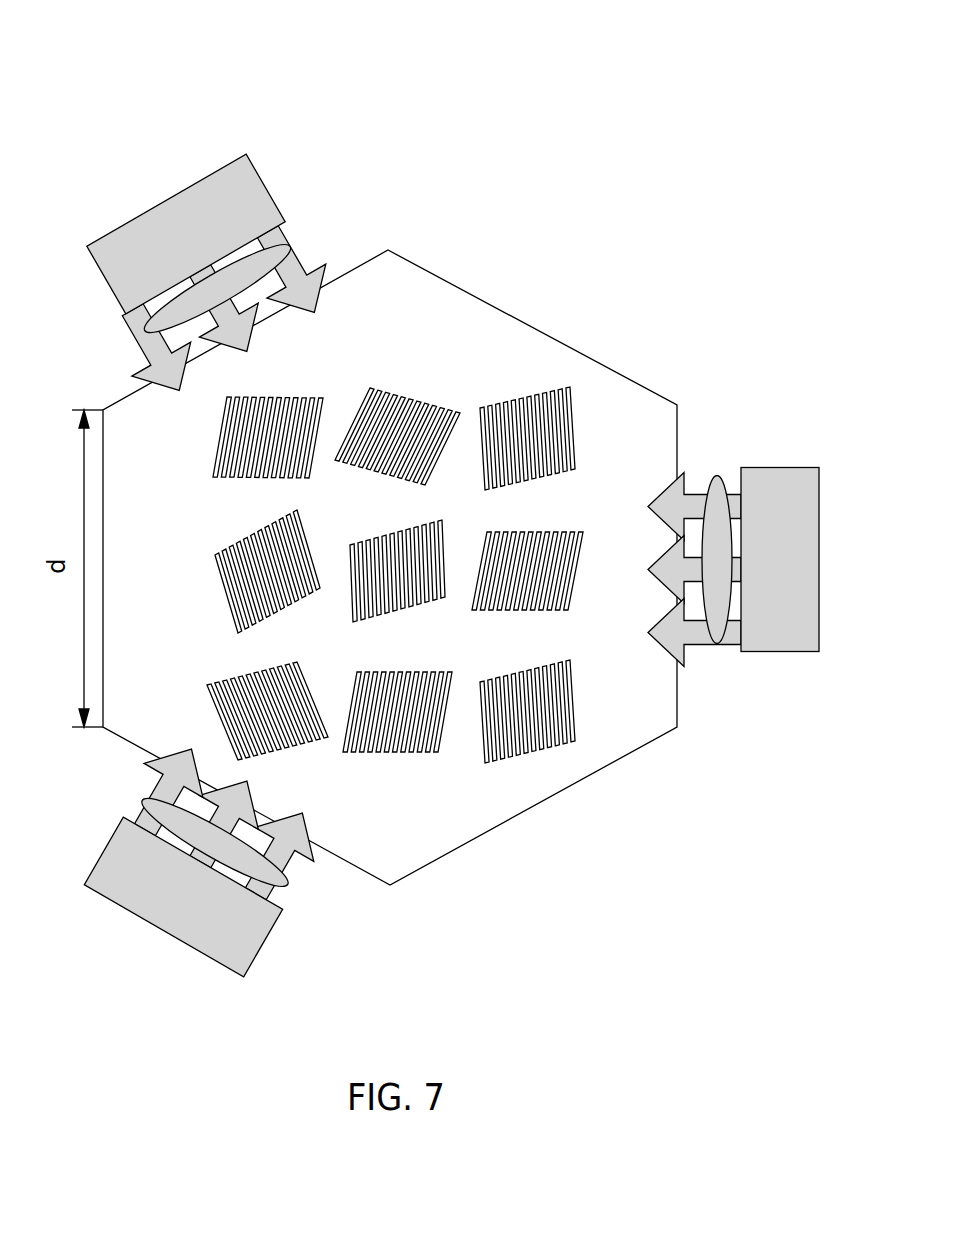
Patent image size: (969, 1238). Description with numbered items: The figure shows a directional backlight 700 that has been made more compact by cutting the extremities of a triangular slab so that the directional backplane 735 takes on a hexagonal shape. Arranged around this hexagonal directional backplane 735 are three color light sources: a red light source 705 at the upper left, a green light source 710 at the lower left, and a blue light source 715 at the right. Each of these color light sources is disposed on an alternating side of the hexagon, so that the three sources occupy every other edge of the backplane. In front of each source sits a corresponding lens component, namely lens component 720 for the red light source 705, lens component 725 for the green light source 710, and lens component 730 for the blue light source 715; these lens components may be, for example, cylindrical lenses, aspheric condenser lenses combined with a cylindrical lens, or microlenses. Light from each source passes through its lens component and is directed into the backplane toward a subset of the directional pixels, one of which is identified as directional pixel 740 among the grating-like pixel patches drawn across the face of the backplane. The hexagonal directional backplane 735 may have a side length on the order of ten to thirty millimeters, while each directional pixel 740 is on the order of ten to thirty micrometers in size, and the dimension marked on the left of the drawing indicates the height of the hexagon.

The directional backlight 700 is at (390, 453).
The red light source 705 is at (170, 203).
The green light source 710 is at (107, 848).
The blue light source 715 is at (783, 467).
The lens component 720 is at (288, 252).
The lens component 725 is at (143, 795).
The lens component 730 is at (717, 478).
The directional backplane 735 is at (467, 308).
The directional pixel 740 is at (548, 397).